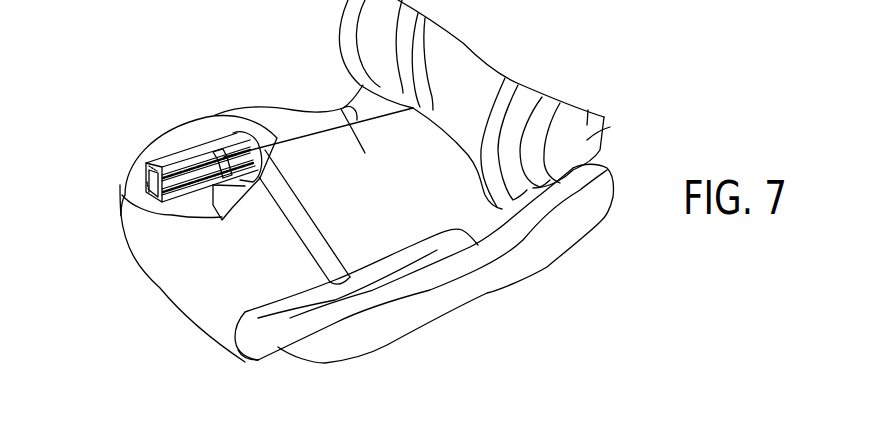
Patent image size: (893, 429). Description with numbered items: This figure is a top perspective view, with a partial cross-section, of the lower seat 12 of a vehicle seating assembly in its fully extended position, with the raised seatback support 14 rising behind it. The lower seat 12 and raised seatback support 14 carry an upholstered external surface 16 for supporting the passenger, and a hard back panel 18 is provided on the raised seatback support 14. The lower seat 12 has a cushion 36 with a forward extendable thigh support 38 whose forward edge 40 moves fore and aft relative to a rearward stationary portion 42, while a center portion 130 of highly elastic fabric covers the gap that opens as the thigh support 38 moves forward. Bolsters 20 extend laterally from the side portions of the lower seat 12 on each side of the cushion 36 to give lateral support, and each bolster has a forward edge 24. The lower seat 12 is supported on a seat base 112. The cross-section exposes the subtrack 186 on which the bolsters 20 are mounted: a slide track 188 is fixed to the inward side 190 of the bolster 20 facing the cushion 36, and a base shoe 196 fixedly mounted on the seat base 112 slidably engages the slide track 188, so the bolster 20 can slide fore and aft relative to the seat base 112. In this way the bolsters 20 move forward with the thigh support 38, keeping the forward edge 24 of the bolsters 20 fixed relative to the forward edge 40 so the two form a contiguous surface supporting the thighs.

The lower seat 12 is at (567, 235).
The raised seatback support 14 is at (587, 123).
The upholstered external surface 16 is at (341, 109).
The hard back panel 18 is at (587, 138).
The bolsters 20 is at (250, 117).
The forward edge of the bolsters 24 is at (123, 187).
The cushion 36 is at (457, 210).
The forward extendable thigh support 38 is at (172, 275).
The forward edge 40 is at (175, 305).
The rearward stationary portion 42 is at (370, 220).
The seat base 112 is at (222, 207).
The center portion 130 is at (330, 243).
The subtrack 186 is at (167, 160).
The slide track 188 is at (124, 189).
The inward side 190 is at (290, 139).
The base shoe 196 is at (222, 157).